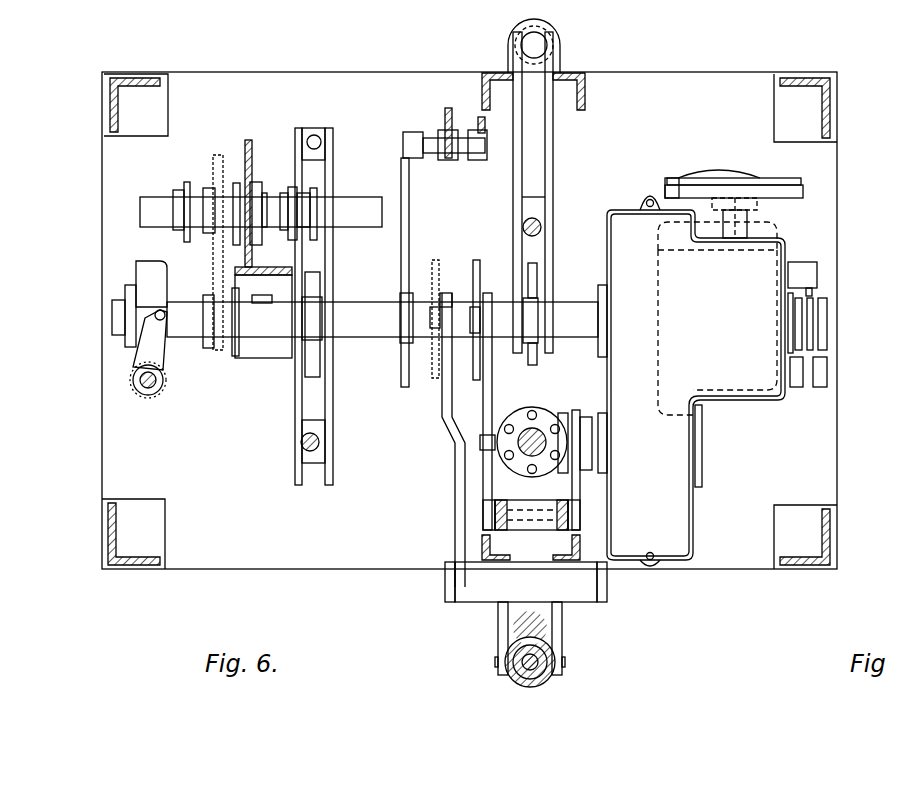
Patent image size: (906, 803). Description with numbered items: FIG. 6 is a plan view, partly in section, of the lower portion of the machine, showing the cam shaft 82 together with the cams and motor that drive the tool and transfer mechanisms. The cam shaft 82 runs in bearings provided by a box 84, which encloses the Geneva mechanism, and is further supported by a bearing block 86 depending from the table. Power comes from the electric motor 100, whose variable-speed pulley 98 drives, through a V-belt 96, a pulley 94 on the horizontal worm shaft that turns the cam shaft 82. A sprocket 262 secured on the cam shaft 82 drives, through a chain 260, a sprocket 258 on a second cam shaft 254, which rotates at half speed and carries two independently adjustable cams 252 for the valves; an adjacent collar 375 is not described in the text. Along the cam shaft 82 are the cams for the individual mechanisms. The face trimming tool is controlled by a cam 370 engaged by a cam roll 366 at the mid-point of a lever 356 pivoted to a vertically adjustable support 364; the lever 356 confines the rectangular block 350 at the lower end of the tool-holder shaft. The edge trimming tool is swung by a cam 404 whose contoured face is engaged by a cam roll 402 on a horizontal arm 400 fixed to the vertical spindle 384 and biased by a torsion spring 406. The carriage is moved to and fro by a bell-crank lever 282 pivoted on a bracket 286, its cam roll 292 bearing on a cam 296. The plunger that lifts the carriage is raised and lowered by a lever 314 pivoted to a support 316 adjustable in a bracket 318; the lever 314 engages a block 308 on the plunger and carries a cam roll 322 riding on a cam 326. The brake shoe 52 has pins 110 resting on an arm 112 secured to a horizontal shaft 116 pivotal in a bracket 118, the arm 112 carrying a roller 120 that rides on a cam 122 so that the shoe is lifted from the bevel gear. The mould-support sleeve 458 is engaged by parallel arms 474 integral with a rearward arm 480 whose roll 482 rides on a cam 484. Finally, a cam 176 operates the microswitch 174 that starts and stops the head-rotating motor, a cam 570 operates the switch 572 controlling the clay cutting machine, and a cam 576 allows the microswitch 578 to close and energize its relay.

The cam shaft 254 is at (150, 210).
The collar 375 is at (186, 188).
The sprocket 258 is at (208, 233).
The chain 260 is at (218, 156).
The lever 356 is at (249, 142).
The bearing block 86 is at (248, 350).
The cams 252 is at (293, 217).
The support 364 is at (315, 135).
The rectangular block 350 is at (303, 455).
The cam roll 366 is at (320, 322).
The cam 370 is at (312, 365).
The cam shaft 82 is at (590, 325).
The cam 404 is at (147, 279).
The cam roll 402 is at (121, 305).
The horizontal arm 400 is at (152, 352).
The torsion spring 406 is at (154, 392).
The vertical spindle 384 is at (140, 381).
The sprocket 262 is at (210, 336).
The cam roll 292 is at (401, 298).
The cam 296 is at (398, 370).
The bell-crank lever 282 is at (472, 160).
The bracket 286 is at (446, 116).
The cam 484 is at (436, 258).
The roll 482 is at (434, 328).
The arm 480 is at (456, 497).
The cam 122 is at (478, 275).
The roller 120 is at (474, 307).
The arm 112 is at (484, 460).
The brake shoe 52 is at (514, 425).
The pins 110 is at (582, 443).
The lever 314 is at (553, 138).
The bracket 318 is at (509, 44).
The support 316 is at (543, 48).
The block 308 is at (537, 210).
The cam roll 322 is at (532, 305).
The cam 326 is at (536, 356).
The box 84 is at (677, 505).
The electric motor 100 is at (743, 408).
The pulley 94 is at (782, 181).
The variable-speed pulley 98 is at (717, 170).
The V-belt 96 is at (678, 185).
The switch 572 is at (817, 273).
The cam 576 is at (802, 315).
The cam 570 is at (813, 322).
The cam 176 is at (827, 335).
The microswitch 174 is at (827, 370).
The microswitch 578 is at (800, 380).
The horizontal shaft 116 is at (535, 522).
The bracket 118 is at (496, 517).
The parallel arms 474 is at (498, 630).
The sleeve 458 is at (548, 655).